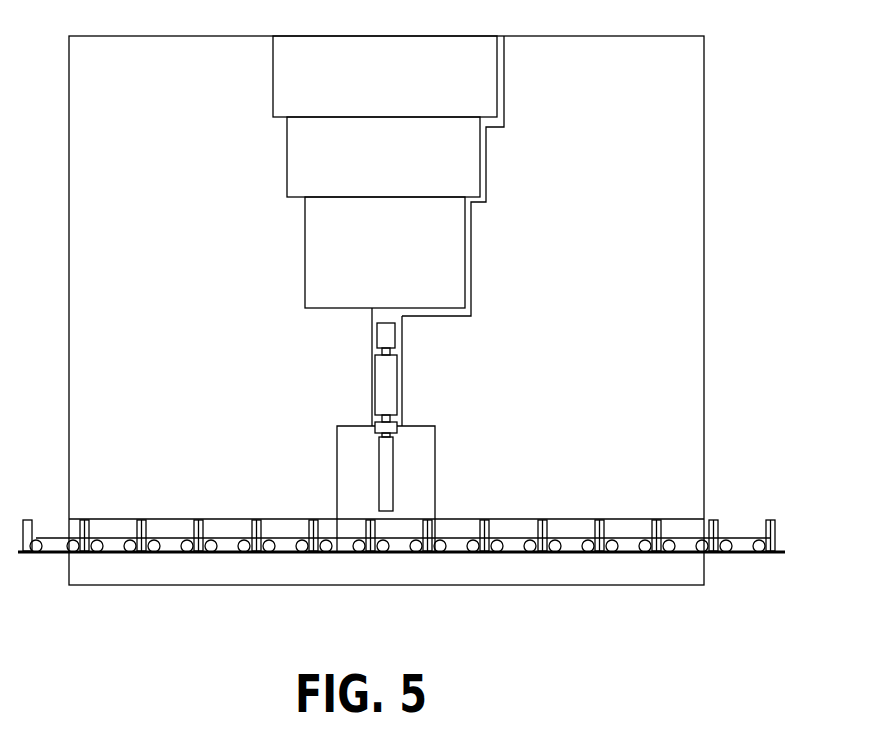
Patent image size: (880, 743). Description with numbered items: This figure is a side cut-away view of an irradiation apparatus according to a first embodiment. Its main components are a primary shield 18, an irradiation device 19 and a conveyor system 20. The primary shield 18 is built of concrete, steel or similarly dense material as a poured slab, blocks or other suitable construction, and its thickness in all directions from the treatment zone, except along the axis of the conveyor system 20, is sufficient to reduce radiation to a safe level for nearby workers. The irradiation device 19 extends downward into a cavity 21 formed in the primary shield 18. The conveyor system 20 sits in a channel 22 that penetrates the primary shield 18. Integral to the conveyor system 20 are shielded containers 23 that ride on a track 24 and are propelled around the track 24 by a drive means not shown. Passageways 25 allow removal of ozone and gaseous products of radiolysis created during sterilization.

The primary shield 18 is at (653, 216).
The irradiation device 19 is at (388, 377).
The conveyor system 20 is at (797, 513).
The cavity 21 is at (418, 463).
The channel 22 is at (58, 523).
The shielded containers 23 is at (511, 528).
The track 24 is at (725, 555).
The passageways 25 is at (485, 200).